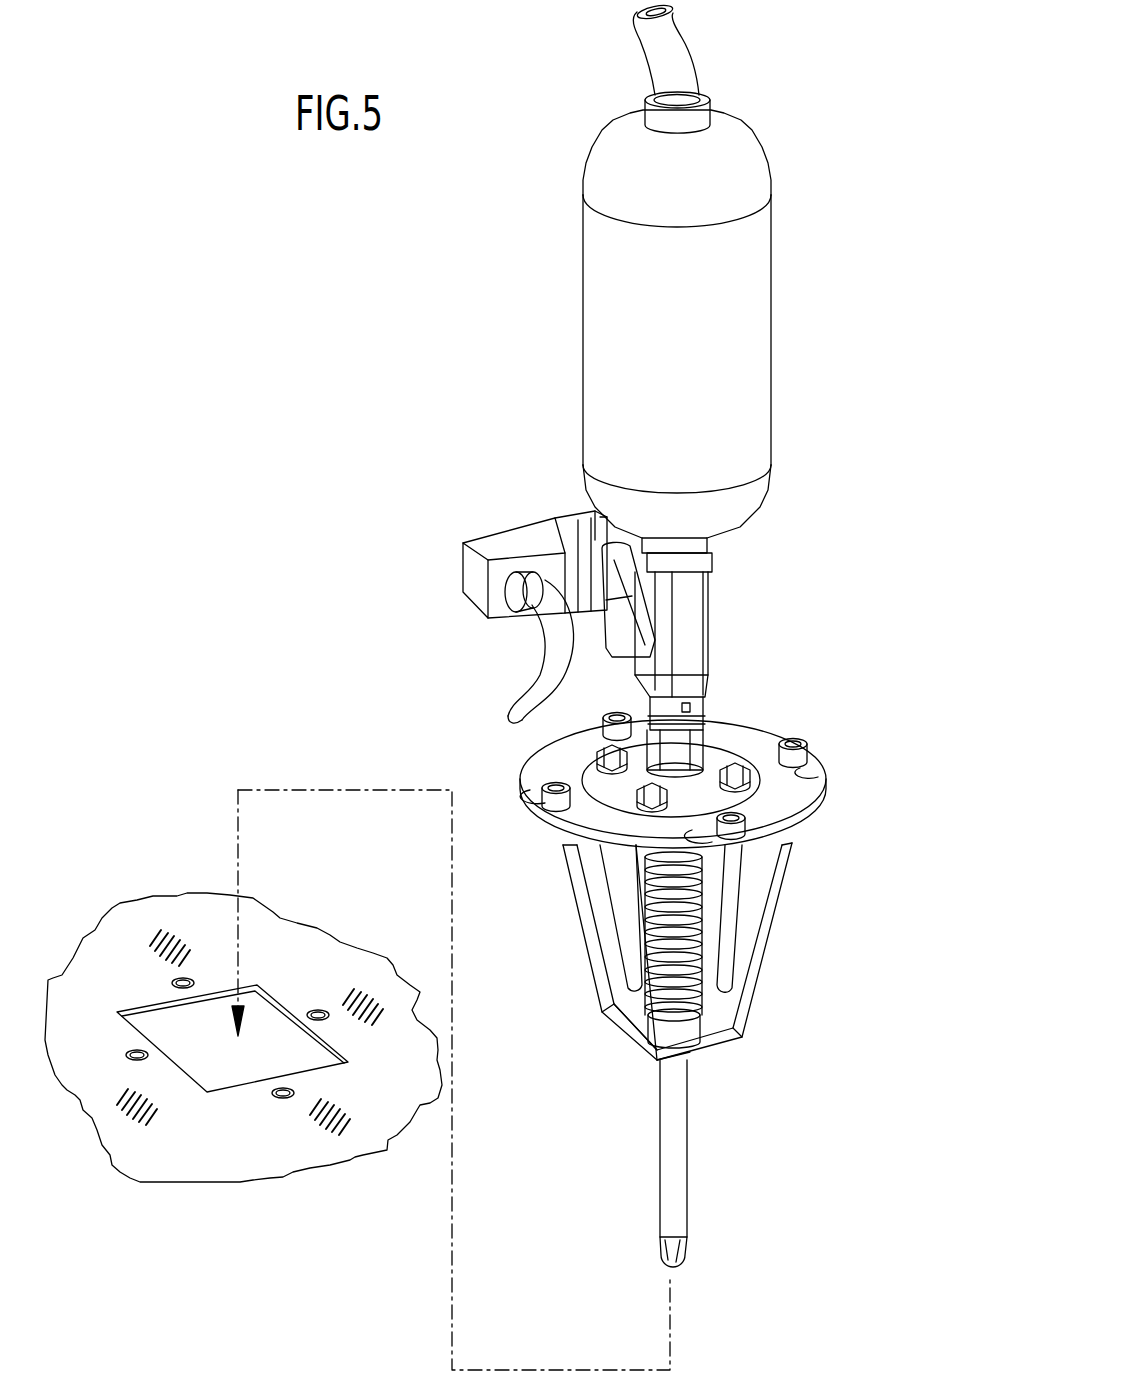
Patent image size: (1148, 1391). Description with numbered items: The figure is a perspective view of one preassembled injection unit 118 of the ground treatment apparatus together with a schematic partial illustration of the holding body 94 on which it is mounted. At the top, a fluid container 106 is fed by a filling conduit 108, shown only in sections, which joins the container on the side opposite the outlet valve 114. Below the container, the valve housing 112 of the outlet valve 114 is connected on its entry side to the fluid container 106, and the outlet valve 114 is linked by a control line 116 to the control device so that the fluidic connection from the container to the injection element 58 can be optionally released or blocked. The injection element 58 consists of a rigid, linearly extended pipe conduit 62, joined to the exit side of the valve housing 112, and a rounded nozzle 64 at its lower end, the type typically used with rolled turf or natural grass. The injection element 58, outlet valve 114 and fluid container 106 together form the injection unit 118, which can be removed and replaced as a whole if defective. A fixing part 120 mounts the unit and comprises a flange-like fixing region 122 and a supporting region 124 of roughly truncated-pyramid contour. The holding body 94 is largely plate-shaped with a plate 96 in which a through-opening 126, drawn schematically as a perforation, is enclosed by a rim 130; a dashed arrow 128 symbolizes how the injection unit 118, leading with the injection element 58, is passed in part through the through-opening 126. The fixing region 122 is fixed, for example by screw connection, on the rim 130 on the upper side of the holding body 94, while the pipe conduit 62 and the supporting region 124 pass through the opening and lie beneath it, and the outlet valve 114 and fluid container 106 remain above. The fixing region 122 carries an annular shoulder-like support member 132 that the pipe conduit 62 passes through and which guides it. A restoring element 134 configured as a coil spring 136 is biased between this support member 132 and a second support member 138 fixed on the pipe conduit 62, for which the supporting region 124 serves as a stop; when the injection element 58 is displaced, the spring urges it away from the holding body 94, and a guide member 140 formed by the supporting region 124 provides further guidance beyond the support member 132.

The injection element 58 is at (734, 1171).
The pipe conduit 62 is at (672, 1213).
The nozzle 64 is at (685, 1243).
The holding body 94 is at (243, 1034).
The plate 96 is at (243, 1034).
The fluid container 106 is at (745, 348).
The filling conduit 108 is at (683, 50).
The valve housing 112 is at (690, 598).
The outlet valve 114 is at (535, 512).
The control line 116 is at (525, 688).
The injection unit 118 is at (759, 270).
The fixing part 120 is at (740, 781).
The fixing region 122 is at (727, 720).
The supporting region 124 is at (785, 942).
The through-opening 126 is at (283, 1054).
The dashed arrow 128 is at (455, 1208).
The rim 130 is at (163, 992).
The support member 132 is at (695, 772).
The restoring element 134 is at (755, 940).
The coil spring 136 is at (697, 880).
The support member 138 is at (690, 1022).
The guide member 140 is at (708, 1030).